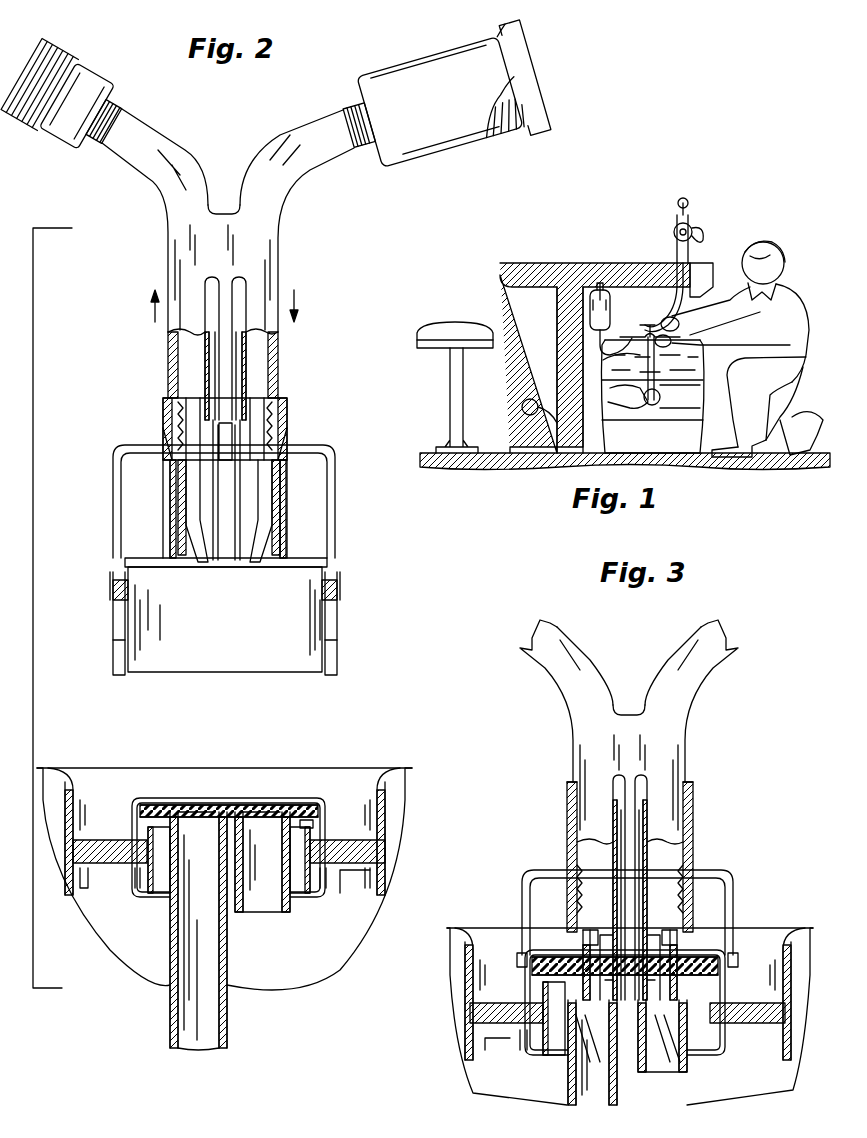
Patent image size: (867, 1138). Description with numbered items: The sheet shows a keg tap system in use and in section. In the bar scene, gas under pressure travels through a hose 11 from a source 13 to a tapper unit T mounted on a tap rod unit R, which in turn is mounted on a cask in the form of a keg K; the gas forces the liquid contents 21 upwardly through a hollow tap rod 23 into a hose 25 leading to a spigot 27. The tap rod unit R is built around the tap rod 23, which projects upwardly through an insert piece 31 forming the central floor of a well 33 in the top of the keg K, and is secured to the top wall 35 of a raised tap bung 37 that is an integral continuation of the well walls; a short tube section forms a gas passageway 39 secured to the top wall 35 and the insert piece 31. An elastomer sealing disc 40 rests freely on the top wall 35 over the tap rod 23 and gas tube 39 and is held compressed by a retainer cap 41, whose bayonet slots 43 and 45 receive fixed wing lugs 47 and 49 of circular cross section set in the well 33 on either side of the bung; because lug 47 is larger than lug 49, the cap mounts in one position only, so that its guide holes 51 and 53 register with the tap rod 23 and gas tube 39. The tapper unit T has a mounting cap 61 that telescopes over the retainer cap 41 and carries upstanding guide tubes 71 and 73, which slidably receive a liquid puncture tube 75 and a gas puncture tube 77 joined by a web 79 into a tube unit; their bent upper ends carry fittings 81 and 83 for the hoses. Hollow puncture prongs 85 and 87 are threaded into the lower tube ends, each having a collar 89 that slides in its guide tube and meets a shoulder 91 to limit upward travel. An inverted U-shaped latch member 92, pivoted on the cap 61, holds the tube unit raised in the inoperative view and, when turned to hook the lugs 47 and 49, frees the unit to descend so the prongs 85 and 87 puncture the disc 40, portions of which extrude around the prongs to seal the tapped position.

In FIG. 1, the hose 11 is at (612, 325).
In FIG. 1, the source 13 is at (580, 350).
In FIG. 1, the liquid contents 21 is at (688, 410).
In FIG. 2, the tap rod 23 is at (228, 1012).
In FIG. 1, the tap rod 23 is at (645, 392).
In FIG. 3, the tap rod 23 is at (618, 1096).
In FIG. 1, the hose 25 is at (672, 300).
In FIG. 1, the spigot 27 is at (692, 230).
In FIG. 2, the insert piece 31 is at (342, 885).
In FIG. 3, the insert piece 31 is at (505, 1045).
In FIG. 2, the well 33 is at (376, 772).
In FIG. 3, the well 33 is at (474, 930).
In FIG. 2, the top wall 35 is at (320, 800).
In FIG. 2, the tap bung 37 is at (318, 822).
In FIG. 2, the gas passageway 39 is at (283, 868).
In FIG. 2, the sealing disc 40 is at (272, 805).
In FIG. 3, the sealing disc 40 is at (560, 962).
In FIG. 2, the retainer cap 41 is at (150, 805).
In FIG. 2, the bayonet slot 43 is at (120, 840).
In FIG. 3, the bayonet slot 43 is at (520, 1030).
In FIG. 2, the bayonet slot 45 is at (320, 842).
In FIG. 2, the wing lug 47 is at (105, 872).
In FIG. 3, the wing lug 47 is at (492, 1010).
In FIG. 2, the wing lug 49 is at (350, 885).
In FIG. 3, the wing lug 49 is at (745, 1010).
In FIG. 2, the guide hole 51 is at (200, 804).
In FIG. 2, the guide hole 53 is at (258, 804).
In FIG. 2, the mounting cap 61 is at (320, 590).
In FIG. 2, the guide tube 71 is at (166, 508).
In FIG. 2, the guide tube 73 is at (288, 520).
In FIG. 2, the liquid puncture tube 75 is at (168, 366).
In FIG. 3, the liquid puncture tube 75 is at (580, 738).
In FIG. 2, the gas puncture tube 77 is at (280, 352).
In FIG. 3, the gas puncture tube 77 is at (683, 742).
In FIG. 2, the web 79 is at (182, 162).
In FIG. 2, the fitting 81 is at (48, 44).
In FIG. 2, the fitting 83 is at (490, 138).
In FIG. 2, the puncture prong 85 is at (196, 566).
In FIG. 3, the puncture prong 85 is at (612, 1056).
In FIG. 2, the puncture prong 87 is at (278, 566).
In FIG. 3, the puncture prong 87 is at (672, 1064).
In FIG. 2, the collar 89 is at (288, 440).
In FIG. 3, the collar 89 is at (685, 940).
In FIG. 2, the shoulder 91 is at (290, 412).
In FIG. 2, the latch member 92 is at (337, 528).
In FIG. 3, the latch member 92 is at (718, 868).
In FIG. 2, the tapper unit T is at (348, 451).
In FIG. 1, the tapper unit T is at (648, 336).
In FIG. 2, the tap rod unit R is at (248, 968).
In FIG. 1, the tap rod unit R is at (618, 364).
In FIG. 1, the keg K is at (660, 446).